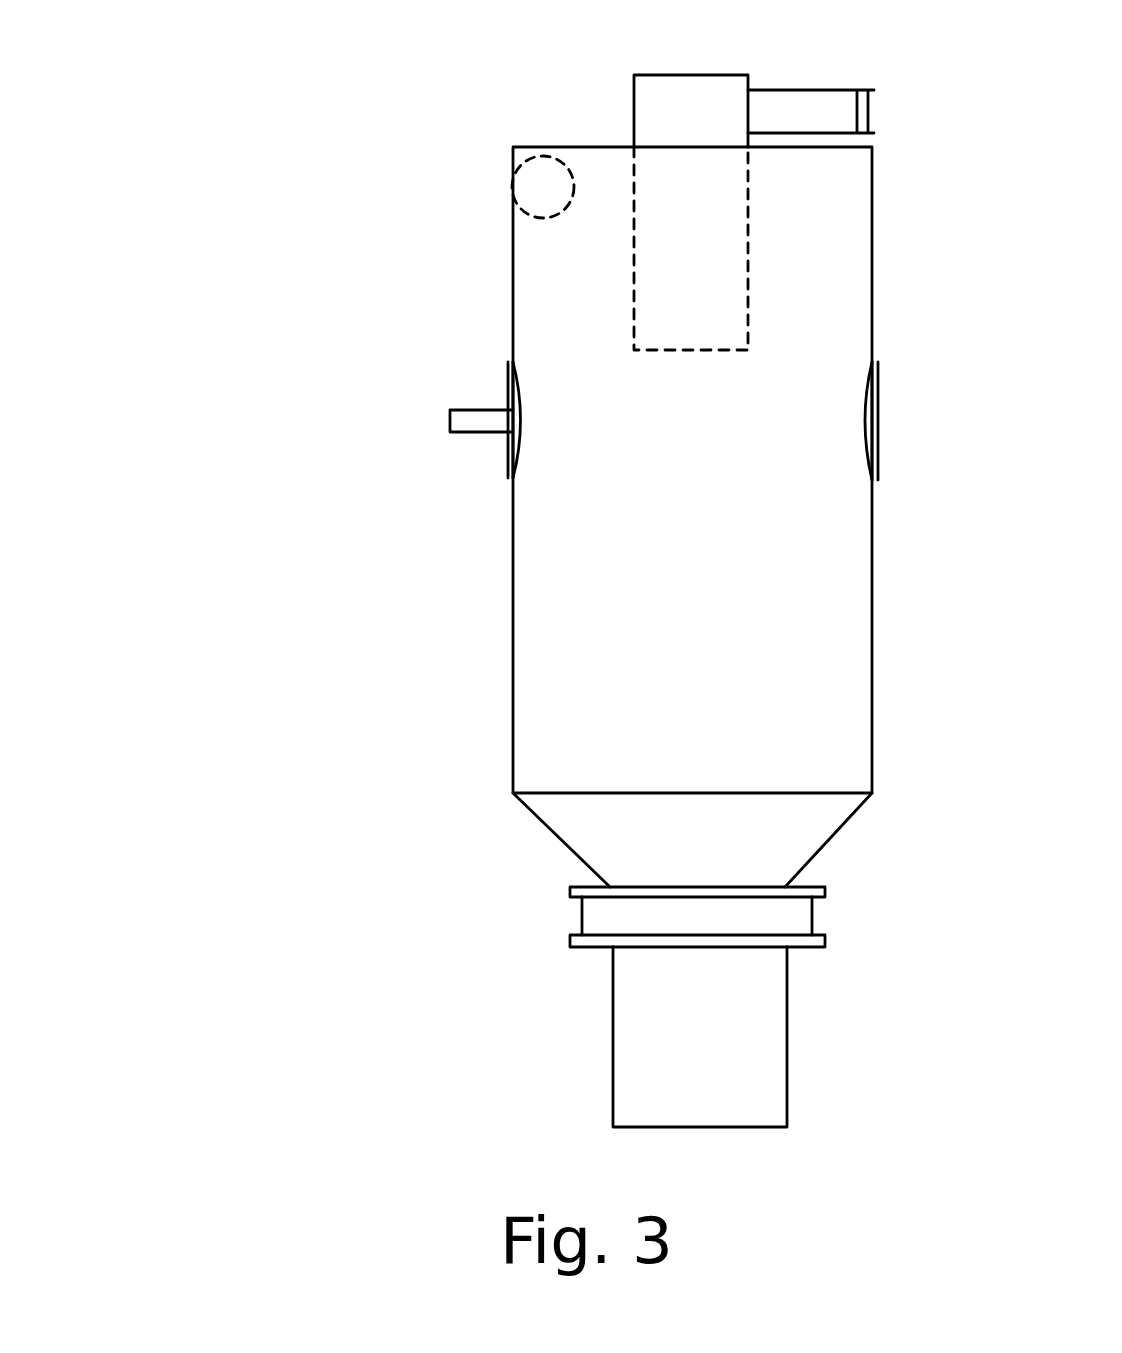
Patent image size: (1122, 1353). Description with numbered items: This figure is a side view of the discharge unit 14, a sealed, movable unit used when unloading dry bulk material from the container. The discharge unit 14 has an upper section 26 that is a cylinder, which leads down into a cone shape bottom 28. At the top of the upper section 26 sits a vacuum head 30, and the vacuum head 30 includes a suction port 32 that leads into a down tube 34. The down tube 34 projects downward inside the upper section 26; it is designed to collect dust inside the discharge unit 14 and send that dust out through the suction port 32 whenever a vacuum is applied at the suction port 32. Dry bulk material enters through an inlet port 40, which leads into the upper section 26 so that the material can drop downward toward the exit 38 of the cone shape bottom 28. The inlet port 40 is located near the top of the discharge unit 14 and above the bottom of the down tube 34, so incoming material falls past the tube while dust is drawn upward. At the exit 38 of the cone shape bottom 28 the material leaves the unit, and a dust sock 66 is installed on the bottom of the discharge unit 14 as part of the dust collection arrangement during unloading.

The discharge unit 14 is at (150, 608).
The upper section 26 is at (550, 552).
The cone shape bottom 28 is at (577, 845).
The vacuum head 30 is at (665, 75).
The suction port 32 is at (790, 90).
The down tube 34 is at (665, 343).
The exit 38 is at (813, 922).
The inlet port 40 is at (530, 182).
The dust sock 66 is at (787, 1027).